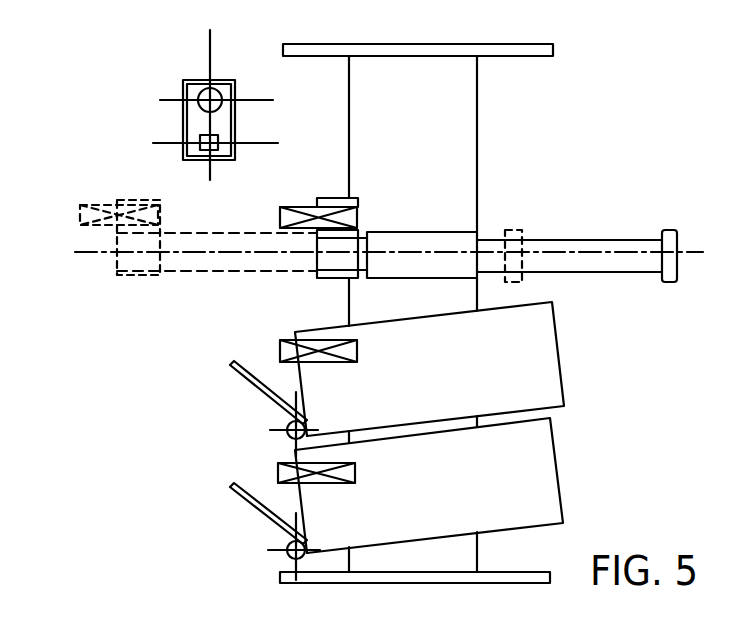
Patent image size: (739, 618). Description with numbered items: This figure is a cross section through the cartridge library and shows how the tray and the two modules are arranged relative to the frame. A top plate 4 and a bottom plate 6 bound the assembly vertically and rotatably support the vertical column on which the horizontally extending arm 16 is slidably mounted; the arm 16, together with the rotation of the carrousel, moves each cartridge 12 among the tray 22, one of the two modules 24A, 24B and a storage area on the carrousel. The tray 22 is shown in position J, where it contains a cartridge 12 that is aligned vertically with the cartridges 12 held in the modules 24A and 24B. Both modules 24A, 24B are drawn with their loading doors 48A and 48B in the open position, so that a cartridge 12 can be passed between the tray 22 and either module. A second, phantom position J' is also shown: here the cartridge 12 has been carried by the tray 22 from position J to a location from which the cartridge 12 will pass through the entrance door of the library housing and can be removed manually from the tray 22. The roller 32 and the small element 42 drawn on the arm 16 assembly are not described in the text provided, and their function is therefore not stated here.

The top plate 4 is at (500, 50).
The bottom plate 6 is at (487, 578).
The cartridge 12 is at (358, 215).
The horizontally extending arm 16 is at (218, 82).
The tray 22 is at (352, 198).
The module 24A is at (545, 362).
The module 24B is at (545, 483).
The roller 32 is at (232, 101).
The latch pin 42 is at (215, 140).
The loading door 48A is at (270, 398).
The loading door 48B is at (268, 512).
The position J is at (261, 205).
The position J' is at (102, 236).